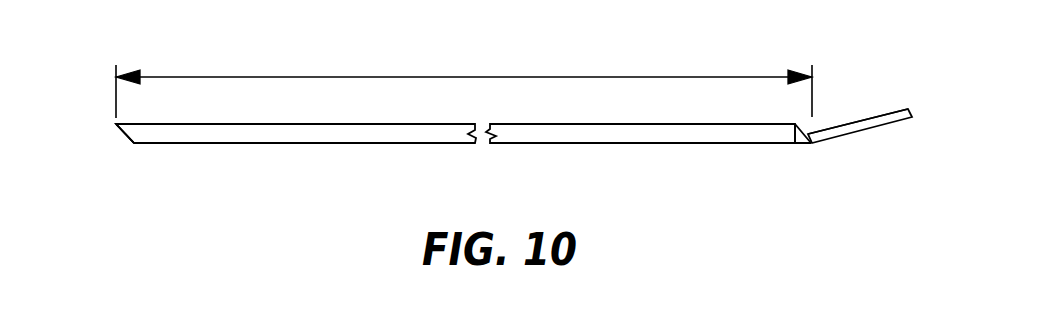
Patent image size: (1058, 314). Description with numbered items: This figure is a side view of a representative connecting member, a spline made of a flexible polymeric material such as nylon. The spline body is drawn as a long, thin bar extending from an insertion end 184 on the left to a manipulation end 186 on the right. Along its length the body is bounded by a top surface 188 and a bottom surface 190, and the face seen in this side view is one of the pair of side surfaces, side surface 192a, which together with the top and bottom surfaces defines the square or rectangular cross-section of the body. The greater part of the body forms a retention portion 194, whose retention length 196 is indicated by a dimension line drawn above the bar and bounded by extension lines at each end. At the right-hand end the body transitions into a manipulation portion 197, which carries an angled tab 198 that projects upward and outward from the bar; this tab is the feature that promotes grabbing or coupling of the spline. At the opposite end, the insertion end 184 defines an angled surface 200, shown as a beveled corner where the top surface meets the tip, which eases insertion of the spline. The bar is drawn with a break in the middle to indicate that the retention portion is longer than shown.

The insertion end 184 is at (122, 133).
The manipulation end 186 is at (857, 132).
The top surface 188 is at (315, 124).
The bottom surface 190 is at (287, 145).
The side surface 192a is at (365, 137).
The retention portion 194 is at (430, 138).
The retention length 196 is at (562, 77).
The manipulation portion 197 is at (829, 141).
The angled tab 198 is at (852, 122).
The angled surface 200 is at (126, 140).